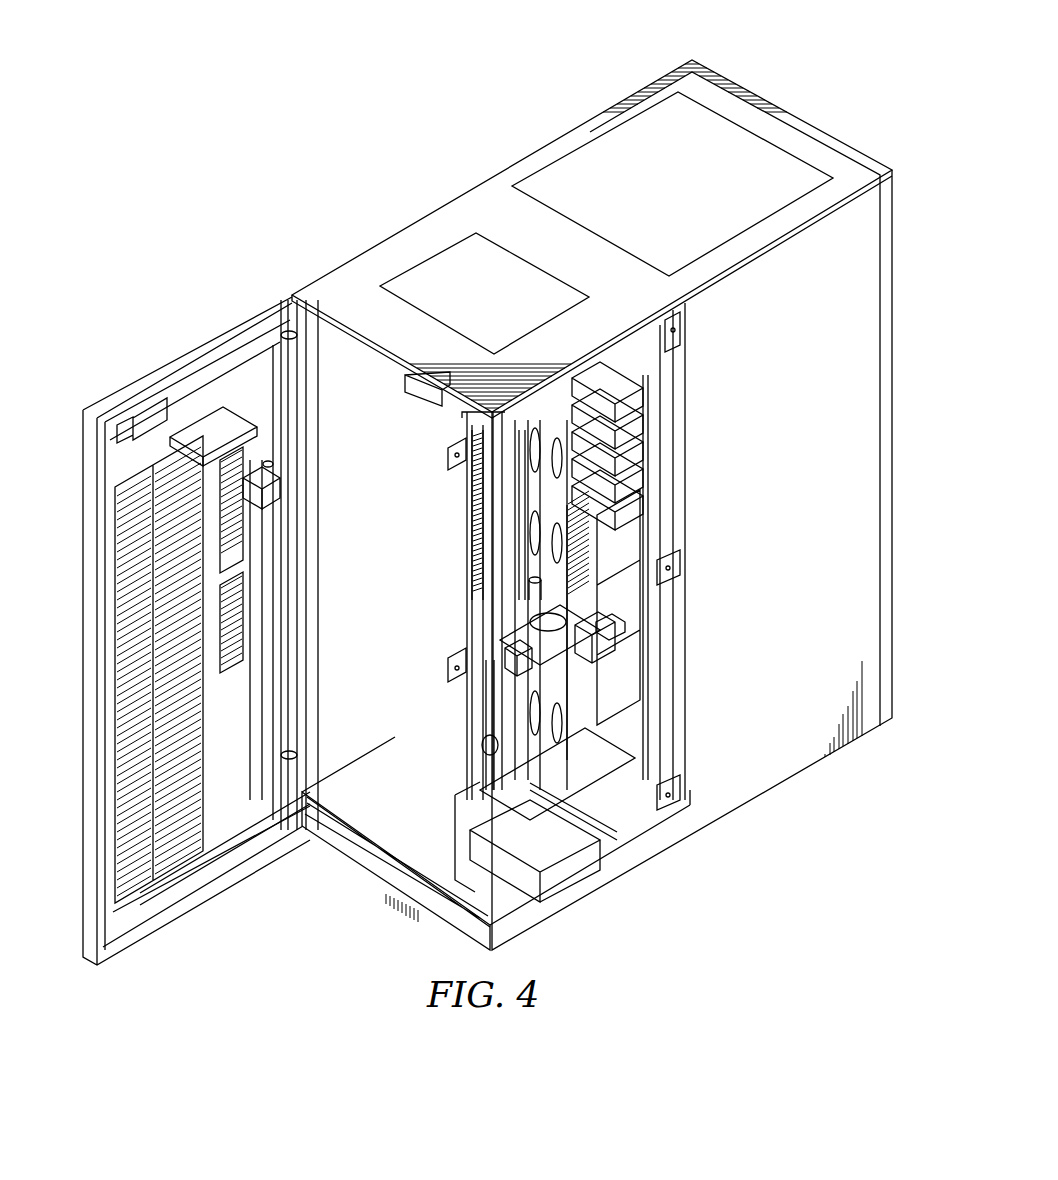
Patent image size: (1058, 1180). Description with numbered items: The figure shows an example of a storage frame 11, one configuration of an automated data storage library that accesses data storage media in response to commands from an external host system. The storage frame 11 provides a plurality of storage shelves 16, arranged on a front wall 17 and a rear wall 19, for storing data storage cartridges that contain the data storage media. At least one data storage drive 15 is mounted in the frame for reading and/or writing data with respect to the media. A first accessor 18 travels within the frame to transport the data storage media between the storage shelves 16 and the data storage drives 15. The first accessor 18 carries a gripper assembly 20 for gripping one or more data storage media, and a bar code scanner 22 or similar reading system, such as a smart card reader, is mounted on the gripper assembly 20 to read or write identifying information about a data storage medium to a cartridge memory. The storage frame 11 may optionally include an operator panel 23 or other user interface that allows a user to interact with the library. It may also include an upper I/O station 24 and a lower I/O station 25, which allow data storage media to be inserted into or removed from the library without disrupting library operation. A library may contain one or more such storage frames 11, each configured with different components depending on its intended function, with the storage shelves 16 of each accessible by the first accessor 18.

The storage frame 11 is at (334, 137).
The data storage drive 15 is at (625, 380).
The storage shelves 16 is at (110, 750).
The front wall 17 is at (83, 548).
The first accessor 18 is at (585, 850).
The rear wall 19 is at (466, 416).
The gripper assembly 20 is at (610, 626).
The bar code scanner 22 is at (512, 648).
The operator panel 23 is at (273, 404).
The upper I/O station 24 is at (240, 462).
The lower I/O station 25 is at (247, 640).